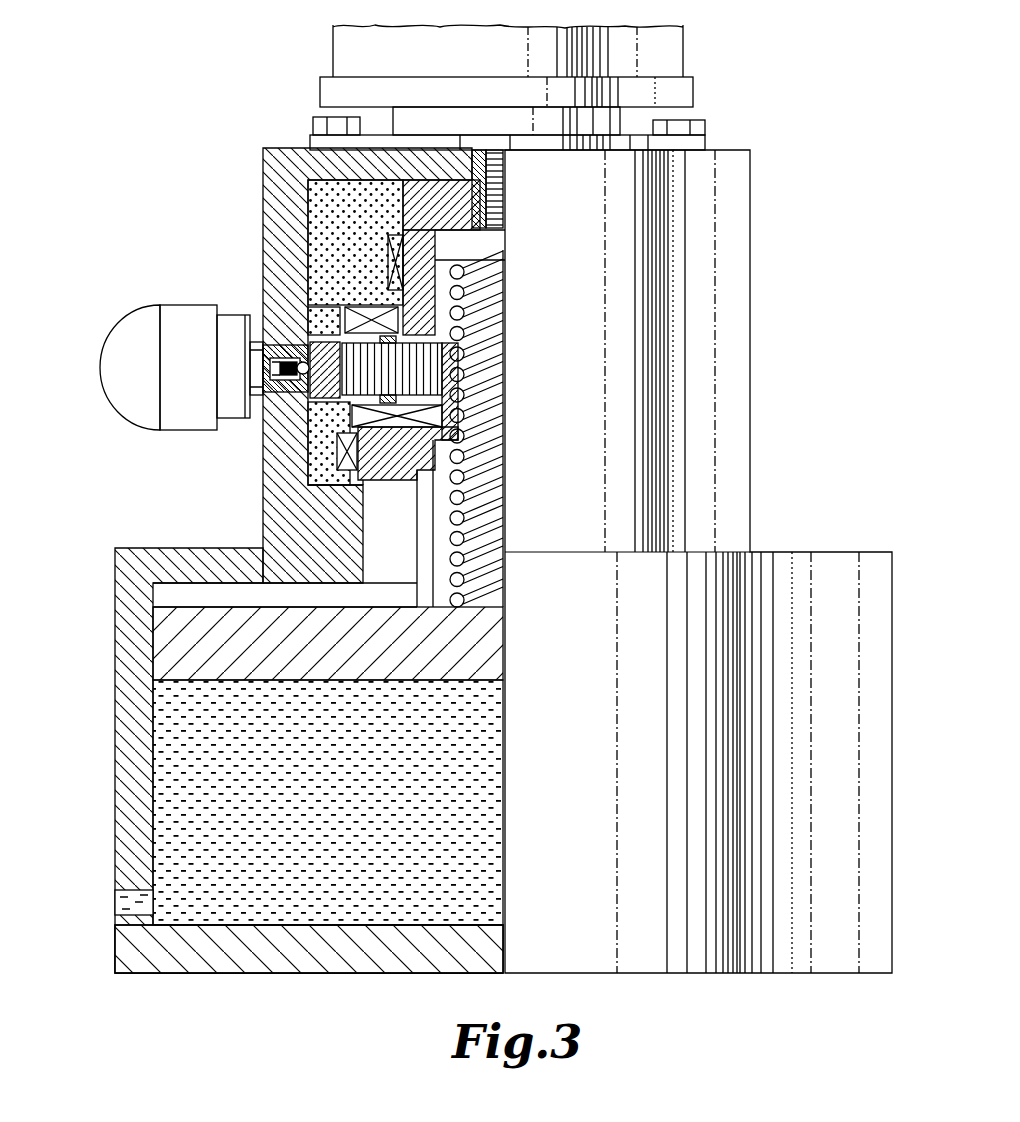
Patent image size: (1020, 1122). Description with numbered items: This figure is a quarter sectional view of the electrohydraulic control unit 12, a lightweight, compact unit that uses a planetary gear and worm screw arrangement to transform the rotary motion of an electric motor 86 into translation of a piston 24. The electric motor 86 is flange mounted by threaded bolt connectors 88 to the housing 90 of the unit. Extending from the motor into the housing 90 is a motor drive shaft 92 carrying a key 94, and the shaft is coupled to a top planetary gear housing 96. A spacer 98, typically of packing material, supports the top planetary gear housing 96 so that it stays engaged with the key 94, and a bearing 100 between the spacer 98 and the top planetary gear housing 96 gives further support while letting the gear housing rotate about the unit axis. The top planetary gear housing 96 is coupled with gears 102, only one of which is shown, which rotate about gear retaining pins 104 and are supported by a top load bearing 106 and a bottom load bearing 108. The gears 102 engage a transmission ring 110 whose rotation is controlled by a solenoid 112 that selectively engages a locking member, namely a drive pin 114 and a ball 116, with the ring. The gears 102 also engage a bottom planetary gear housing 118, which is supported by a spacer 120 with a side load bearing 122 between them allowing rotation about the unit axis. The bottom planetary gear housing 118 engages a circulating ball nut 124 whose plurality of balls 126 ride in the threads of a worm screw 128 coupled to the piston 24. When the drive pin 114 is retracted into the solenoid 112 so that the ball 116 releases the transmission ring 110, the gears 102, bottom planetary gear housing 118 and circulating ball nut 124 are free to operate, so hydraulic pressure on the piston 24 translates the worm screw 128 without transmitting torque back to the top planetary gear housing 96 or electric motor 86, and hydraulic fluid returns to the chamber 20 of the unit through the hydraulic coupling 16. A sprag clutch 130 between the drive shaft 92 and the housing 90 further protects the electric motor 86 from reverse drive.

The electrohydraulic control unit 12 is at (240, 150).
The hydraulic coupling 16 is at (135, 913).
The chamber 20 is at (120, 783).
The piston 24 is at (170, 652).
The electric motor 86 is at (677, 55).
The threaded bolt connectors 88 is at (317, 118).
The housing 90 is at (740, 217).
The motor drive shaft 92 is at (505, 206).
The key 94 is at (488, 222).
The top planetary gear housing 96 is at (468, 232).
The spacer 98 is at (305, 238).
The bearing 100 is at (405, 262).
The gears 102 is at (460, 396).
The gear retaining pins 104 is at (444, 345).
The top load bearing 106 is at (398, 322).
The bottom load bearing 108 is at (444, 417).
The transmission ring 110 is at (318, 452).
The solenoid 112 is at (135, 426).
The drive pin 114 is at (312, 396).
The ball 116 is at (293, 338).
The bottom planetary gear housing 118 is at (460, 442).
The spacer 120 is at (335, 460).
The side load bearing 122 is at (305, 487).
The circulating ball nut 124 is at (432, 582).
The balls 126 is at (463, 498).
The worm screw 128 is at (483, 577).
The sprag clutch 130 is at (490, 165).